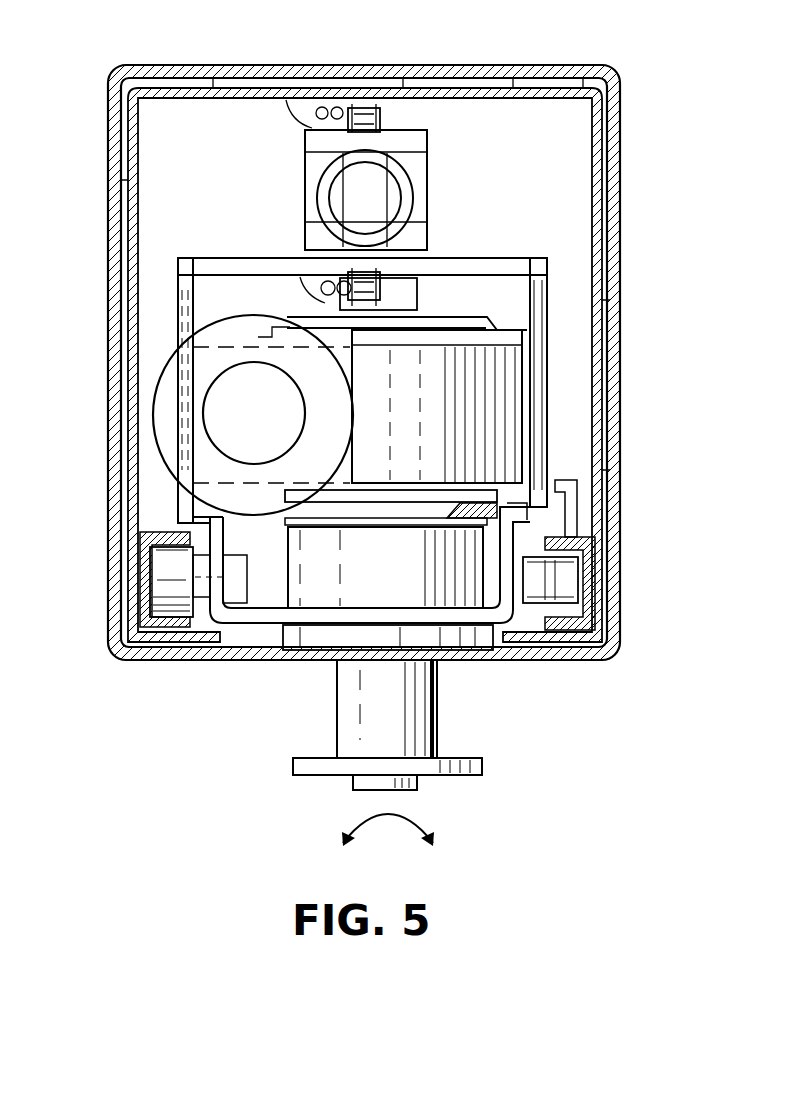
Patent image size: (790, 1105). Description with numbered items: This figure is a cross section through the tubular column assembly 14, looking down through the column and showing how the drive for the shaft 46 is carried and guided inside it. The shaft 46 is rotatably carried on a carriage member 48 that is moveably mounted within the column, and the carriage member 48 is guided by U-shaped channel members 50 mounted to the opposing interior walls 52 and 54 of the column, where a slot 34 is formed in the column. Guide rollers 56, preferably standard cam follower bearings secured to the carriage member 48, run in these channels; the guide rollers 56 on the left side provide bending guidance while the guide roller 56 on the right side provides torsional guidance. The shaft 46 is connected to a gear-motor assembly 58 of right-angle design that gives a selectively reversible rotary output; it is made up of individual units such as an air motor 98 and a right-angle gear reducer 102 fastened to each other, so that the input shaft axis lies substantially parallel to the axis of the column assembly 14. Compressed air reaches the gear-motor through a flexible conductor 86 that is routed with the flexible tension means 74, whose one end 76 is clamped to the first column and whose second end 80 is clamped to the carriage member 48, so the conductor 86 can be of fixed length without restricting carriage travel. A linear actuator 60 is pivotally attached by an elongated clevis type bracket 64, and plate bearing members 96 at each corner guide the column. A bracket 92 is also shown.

The column assembly 14 is at (730, 234).
The slot 34 is at (497, 661).
The shaft 46 is at (483, 772).
The carriage member 48 is at (552, 418).
The U-shaped channel members 50 is at (157, 533).
The interior wall 52 is at (592, 360).
The interior wall 54 is at (132, 321).
The guide rollers 56 is at (168, 577).
The gear-motor assembly 58 is at (272, 548).
The linear actuator 60 is at (413, 203).
The elongated clevis type bracket 64 is at (425, 168).
The flexible tension means 74 is at (402, 118).
The end 76 is at (406, 108).
The second end 80 is at (417, 294).
The flexible conductor 86 is at (290, 100).
The bracket 92 is at (580, 510).
The plate bearing members 96 is at (167, 82).
The air motor 98 is at (157, 404).
The right-angle gear reducer 102 is at (500, 440).